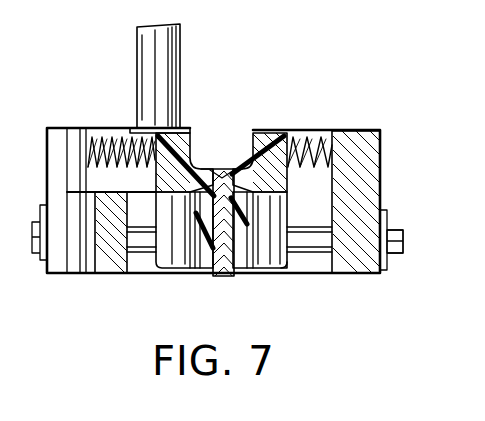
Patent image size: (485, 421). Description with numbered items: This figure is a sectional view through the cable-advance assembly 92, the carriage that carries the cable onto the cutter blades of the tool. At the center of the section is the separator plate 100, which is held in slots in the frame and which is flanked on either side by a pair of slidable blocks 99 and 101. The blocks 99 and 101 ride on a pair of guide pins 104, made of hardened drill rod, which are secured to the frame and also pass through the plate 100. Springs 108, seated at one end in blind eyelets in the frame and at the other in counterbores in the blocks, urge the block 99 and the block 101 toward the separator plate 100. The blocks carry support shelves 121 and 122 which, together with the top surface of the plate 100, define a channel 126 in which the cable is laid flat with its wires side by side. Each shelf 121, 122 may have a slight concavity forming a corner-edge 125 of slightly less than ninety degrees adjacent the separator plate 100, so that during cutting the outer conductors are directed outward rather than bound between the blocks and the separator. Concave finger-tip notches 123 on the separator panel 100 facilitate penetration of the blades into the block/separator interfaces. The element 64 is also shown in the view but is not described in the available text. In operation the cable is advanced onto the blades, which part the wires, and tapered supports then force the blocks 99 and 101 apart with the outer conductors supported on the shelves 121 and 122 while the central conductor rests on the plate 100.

The rod 64 is at (180, 30).
The cable-advance assembly 92 is at (384, 172).
The slidable block 99 is at (283, 268).
The separator plate 100 is at (223, 272).
The slidable block 101 is at (175, 266).
The guide pin 104 is at (400, 251).
The spring 108 is at (320, 138).
The support shelf 121 is at (244, 140).
The support shelf 122 is at (212, 140).
The finger-tip notch 123 is at (214, 208).
The corner-edge 125 is at (222, 166).
The channel 126 is at (230, 128).